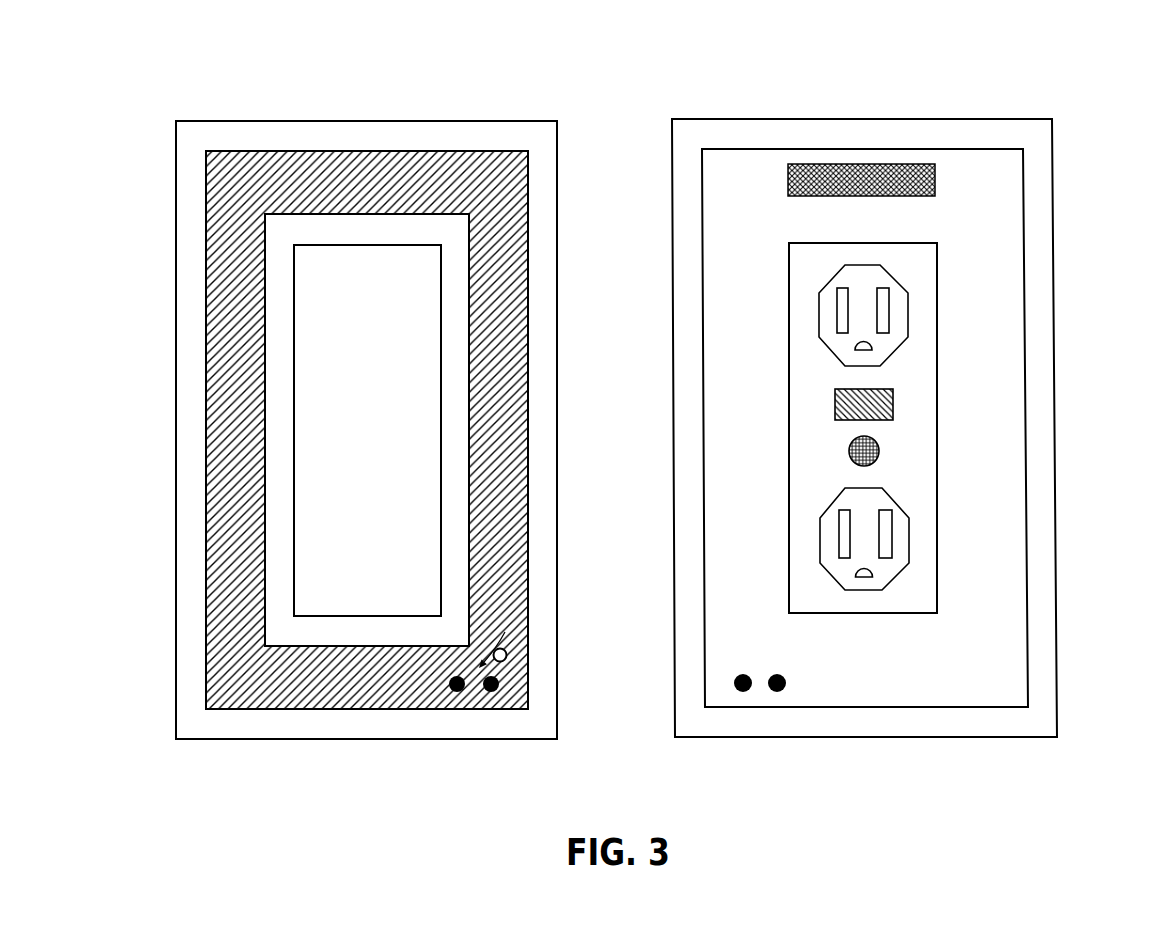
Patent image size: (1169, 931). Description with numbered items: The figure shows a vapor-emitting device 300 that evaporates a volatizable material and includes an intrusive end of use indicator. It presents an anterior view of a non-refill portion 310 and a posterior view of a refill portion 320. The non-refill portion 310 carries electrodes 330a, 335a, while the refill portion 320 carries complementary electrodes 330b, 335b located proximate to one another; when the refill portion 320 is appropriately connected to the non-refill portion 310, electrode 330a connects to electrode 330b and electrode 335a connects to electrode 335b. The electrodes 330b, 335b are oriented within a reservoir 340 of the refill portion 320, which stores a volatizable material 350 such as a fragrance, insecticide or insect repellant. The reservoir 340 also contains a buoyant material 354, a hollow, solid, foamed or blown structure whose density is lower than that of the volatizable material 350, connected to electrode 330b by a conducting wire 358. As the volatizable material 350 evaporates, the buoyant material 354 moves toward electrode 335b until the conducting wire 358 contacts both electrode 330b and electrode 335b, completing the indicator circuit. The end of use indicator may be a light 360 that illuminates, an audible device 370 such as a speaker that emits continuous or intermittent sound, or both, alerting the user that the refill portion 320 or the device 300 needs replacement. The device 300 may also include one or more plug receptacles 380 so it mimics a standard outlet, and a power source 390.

The vapor-emitting device 300 is at (138, 116).
The non-refill portion 310 is at (852, 119).
The refill portion 320 is at (358, 121).
The electrode 330a is at (783, 691).
The electrode 330b is at (448, 693).
The electrode 335a is at (738, 692).
The electrode 335b is at (495, 692).
The reservoir 340 is at (207, 360).
The volatizable material 350 is at (235, 498).
The buoyant material 354 is at (507, 654).
The conducting wire 358 is at (505, 632).
The light 360 is at (893, 397).
The audible device 370 is at (877, 440).
The plug receptacle 380 is at (908, 315).
The power source 390 is at (830, 177).